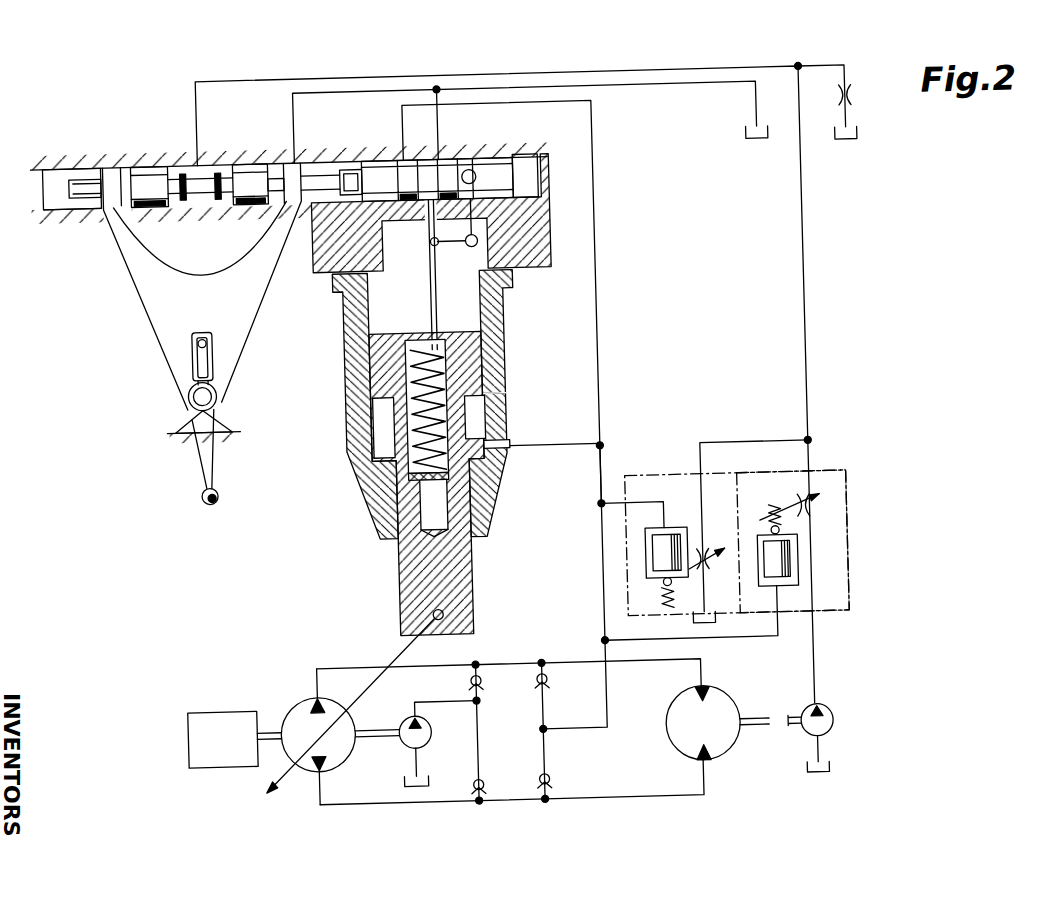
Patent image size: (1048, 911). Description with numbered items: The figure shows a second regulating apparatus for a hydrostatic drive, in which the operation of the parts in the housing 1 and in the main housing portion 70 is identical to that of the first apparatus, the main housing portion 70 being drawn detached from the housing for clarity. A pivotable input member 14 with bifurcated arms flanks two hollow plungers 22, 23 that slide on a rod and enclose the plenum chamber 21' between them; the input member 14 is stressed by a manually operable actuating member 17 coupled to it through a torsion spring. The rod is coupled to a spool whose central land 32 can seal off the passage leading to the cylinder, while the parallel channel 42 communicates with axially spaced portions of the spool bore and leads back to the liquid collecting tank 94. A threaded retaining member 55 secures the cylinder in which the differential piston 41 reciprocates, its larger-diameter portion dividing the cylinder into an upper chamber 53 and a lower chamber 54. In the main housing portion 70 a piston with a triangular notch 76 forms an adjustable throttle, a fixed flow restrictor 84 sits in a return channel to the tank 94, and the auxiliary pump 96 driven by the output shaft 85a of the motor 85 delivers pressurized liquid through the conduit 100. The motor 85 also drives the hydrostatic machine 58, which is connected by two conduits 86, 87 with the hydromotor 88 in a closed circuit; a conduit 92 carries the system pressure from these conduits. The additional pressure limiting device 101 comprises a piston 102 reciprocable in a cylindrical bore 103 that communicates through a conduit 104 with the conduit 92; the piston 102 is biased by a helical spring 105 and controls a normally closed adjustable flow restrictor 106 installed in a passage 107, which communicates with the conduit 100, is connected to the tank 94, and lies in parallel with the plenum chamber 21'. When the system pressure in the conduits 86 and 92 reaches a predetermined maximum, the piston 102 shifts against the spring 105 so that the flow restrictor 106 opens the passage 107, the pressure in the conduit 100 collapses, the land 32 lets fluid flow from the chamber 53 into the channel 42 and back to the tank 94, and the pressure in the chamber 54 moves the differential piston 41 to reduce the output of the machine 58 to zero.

The housing 1 is at (24, 173).
The plunger 22 is at (147, 168).
The plenum chamber 21' is at (199, 161).
The plunger 23 is at (253, 156).
The land 32 is at (424, 150).
The channel 42 is at (641, 81).
The liquid collecting tank 94 is at (753, 139).
The fixed flow restrictor 84 is at (859, 101).
The conduit 100 is at (800, 272).
The conduit 92 is at (591, 339).
The upper chamber 53 is at (462, 299).
The lower chamber 54 is at (470, 398).
The threaded retaining member 55 is at (348, 368).
The input member 14 is at (160, 322).
The actuating member 17 is at (196, 440).
The differential piston 41 is at (398, 570).
The conduit 104 is at (600, 495).
The pressure limiting device 101 is at (652, 478).
The passage 107 is at (742, 435).
The main housing portion 70 is at (812, 480).
The triangular notch 76 is at (810, 520).
The cylindrical bore 103 is at (633, 534).
The adjustable flow restrictor 106 is at (698, 541).
The piston 102 is at (653, 561).
The helical spring 105 is at (653, 578).
The motor 85 is at (198, 706).
The output shaft 85a is at (247, 718).
The hydrostatic machine 58 is at (282, 697).
The conduit 86 is at (556, 657).
The conduit 87 is at (591, 791).
The hydromotor 88 is at (709, 706).
The auxiliary pump 96 is at (814, 716).